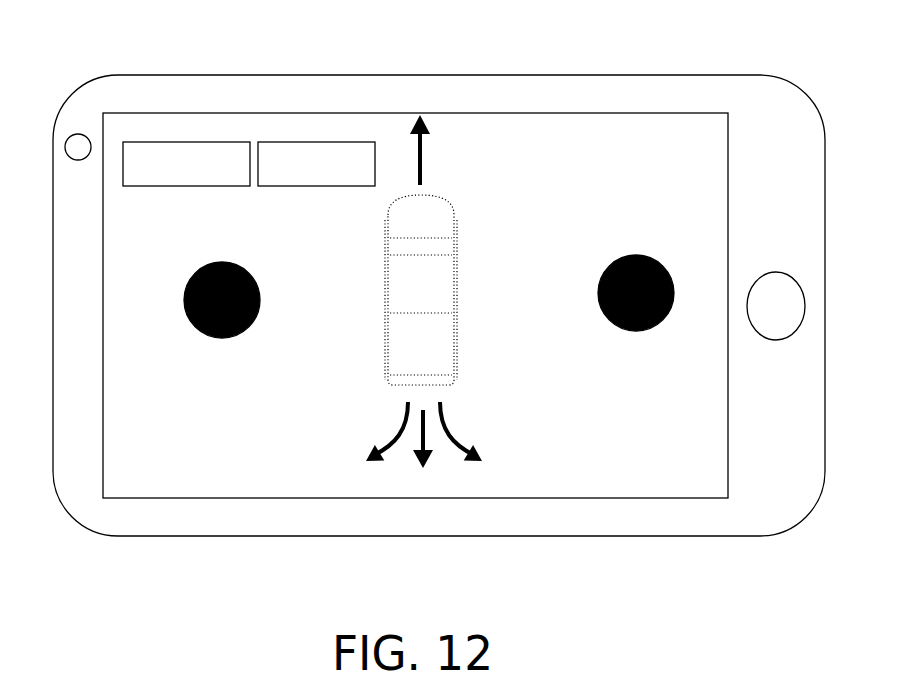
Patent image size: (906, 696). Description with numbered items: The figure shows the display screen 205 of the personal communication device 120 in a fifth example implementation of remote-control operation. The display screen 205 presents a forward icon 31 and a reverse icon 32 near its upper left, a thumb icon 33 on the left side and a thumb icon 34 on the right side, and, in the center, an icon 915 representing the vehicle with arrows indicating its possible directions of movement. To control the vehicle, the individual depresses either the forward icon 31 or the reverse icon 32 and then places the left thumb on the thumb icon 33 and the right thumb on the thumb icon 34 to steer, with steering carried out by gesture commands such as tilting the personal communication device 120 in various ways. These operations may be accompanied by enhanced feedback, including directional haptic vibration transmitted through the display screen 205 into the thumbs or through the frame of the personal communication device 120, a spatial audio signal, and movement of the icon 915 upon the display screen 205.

The personal communication device 120 is at (637, 76).
The display screen 205 is at (595, 140).
The forward icon 31 is at (188, 187).
The reverse icon 32 is at (300, 187).
The thumb icon 33 is at (240, 356).
The thumb icon 34 is at (618, 346).
The icon 915 is at (480, 266).